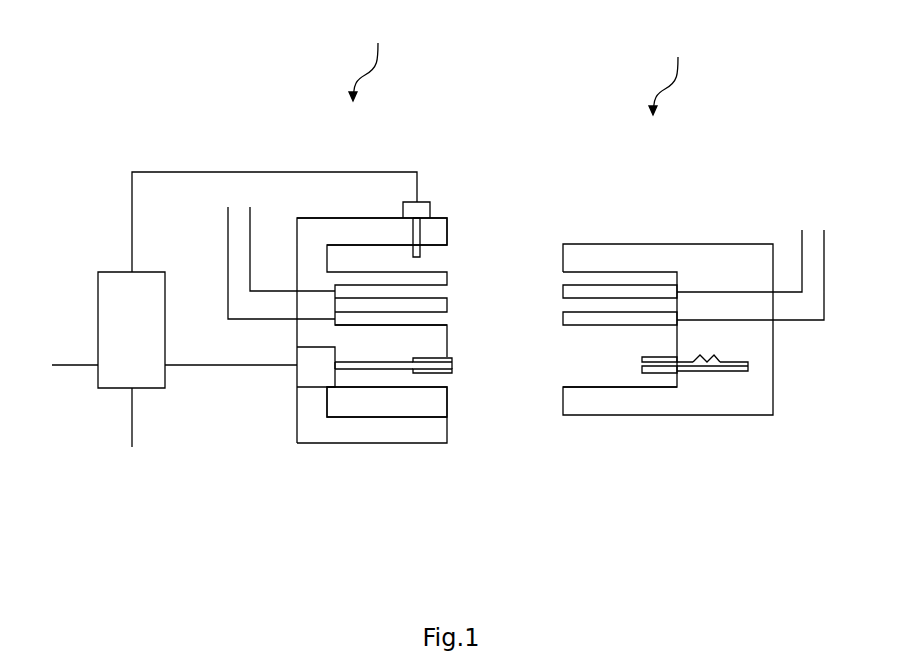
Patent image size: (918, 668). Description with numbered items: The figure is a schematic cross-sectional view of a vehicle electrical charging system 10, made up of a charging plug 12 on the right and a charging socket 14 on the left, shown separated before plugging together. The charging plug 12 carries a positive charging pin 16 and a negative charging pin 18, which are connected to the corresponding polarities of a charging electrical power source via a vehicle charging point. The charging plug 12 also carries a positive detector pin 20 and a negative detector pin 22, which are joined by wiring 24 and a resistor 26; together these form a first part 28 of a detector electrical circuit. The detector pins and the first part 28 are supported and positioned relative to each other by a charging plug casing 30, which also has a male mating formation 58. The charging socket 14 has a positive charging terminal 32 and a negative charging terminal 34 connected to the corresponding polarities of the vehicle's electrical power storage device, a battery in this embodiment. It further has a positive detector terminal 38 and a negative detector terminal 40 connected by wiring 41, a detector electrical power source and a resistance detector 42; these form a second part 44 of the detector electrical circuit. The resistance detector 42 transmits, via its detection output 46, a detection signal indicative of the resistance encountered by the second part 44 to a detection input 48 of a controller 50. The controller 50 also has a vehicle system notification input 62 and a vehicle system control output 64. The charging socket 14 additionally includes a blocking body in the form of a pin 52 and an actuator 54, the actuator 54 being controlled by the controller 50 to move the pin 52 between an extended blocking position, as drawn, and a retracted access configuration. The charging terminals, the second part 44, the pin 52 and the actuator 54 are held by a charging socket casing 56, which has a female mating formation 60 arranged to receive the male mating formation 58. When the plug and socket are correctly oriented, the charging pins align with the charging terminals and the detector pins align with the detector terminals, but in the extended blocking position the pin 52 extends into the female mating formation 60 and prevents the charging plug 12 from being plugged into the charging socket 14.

The vehicle electrical charging system 10 is at (521, 66).
The charging plug 12 is at (712, 253).
The charging socket 14 is at (325, 430).
The positive charging pin 16 is at (643, 292).
The negative charging pin 18 is at (600, 320).
The positive detector pin 20 is at (648, 360).
The negative detector pin 22 is at (665, 372).
The wiring 24 is at (750, 365).
The resistor 26 is at (718, 362).
The first part of detector electrical circuit 28 is at (693, 372).
The charging plug casing 30 is at (757, 347).
The positive charging terminal 32 is at (393, 292).
The negative charging terminal 34 is at (370, 320).
The positive detector terminal 38 is at (442, 366).
The negative detector terminal 40 is at (432, 373).
The wiring 41 is at (362, 373).
The resistance detector 42 is at (310, 375).
The second part of detector electrical circuit 44 is at (383, 373).
The detection output 46 is at (297, 369).
The detection input 48 is at (165, 367).
The controller 50 is at (127, 310).
The pin 52 is at (414, 240).
The actuator 54 is at (418, 213).
The charging socket casing 56 is at (312, 237).
The male mating formation 58 is at (620, 395).
The female mating formation 60 is at (402, 402).
The vehicle system notification input 62 is at (132, 400).
The vehicle system control output 64 is at (87, 365).